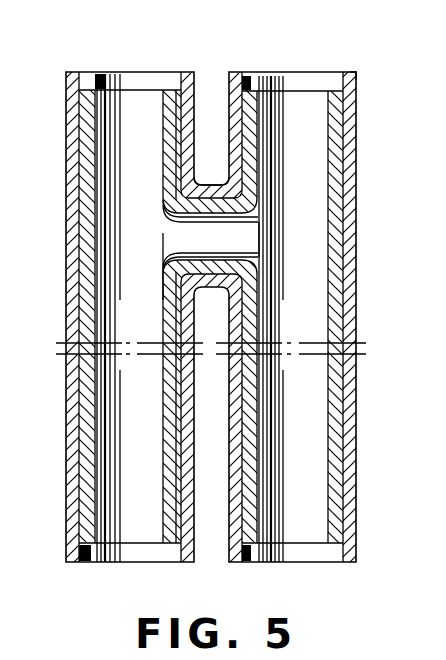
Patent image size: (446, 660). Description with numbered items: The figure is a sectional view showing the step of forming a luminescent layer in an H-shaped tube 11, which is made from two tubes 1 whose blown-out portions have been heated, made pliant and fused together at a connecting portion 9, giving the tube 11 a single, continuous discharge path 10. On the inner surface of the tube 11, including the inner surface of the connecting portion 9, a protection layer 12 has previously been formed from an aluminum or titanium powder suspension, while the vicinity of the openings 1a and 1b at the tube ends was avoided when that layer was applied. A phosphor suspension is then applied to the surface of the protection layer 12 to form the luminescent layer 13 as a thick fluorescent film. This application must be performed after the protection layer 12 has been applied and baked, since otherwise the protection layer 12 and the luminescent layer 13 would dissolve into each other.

The tube 1 is at (68, 150).
The opening 1a is at (130, 80).
The opening 1b is at (100, 562).
The connecting portion 9 is at (208, 178).
The discharge path 10 is at (196, 233).
The H-shaped tube 11 is at (371, 78).
The protection layer 12 is at (92, 409).
The luminescent layer 13 is at (97, 455).